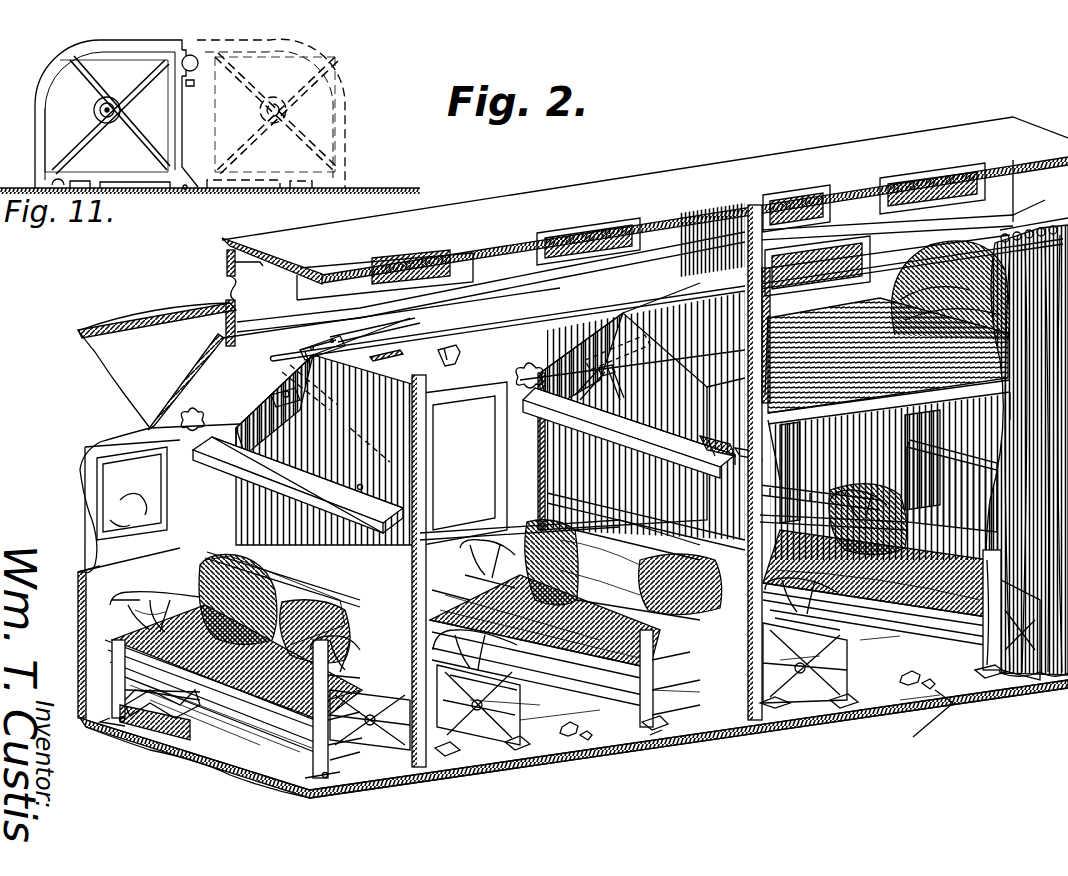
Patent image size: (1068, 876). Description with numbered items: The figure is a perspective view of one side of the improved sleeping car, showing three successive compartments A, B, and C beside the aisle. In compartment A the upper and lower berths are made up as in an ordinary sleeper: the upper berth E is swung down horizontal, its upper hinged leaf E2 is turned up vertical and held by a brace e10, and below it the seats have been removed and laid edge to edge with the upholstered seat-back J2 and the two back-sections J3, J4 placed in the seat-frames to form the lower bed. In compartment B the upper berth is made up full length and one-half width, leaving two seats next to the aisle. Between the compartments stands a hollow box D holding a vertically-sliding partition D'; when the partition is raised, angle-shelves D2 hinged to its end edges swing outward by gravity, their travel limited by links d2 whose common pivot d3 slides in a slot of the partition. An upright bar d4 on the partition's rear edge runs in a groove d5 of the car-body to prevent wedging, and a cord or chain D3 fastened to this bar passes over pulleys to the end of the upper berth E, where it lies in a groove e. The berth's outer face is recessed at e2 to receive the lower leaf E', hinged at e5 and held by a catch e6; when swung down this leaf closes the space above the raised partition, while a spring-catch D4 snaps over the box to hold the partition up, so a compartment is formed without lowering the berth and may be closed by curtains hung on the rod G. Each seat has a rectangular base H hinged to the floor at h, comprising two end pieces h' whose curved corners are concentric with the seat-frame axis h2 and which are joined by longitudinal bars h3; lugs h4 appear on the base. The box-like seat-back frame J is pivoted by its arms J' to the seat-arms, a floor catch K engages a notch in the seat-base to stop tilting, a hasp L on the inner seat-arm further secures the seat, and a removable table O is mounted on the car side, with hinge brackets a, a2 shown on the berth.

In FIG. 11, the rectangular base H is at (116, 114).
In FIG. 11, the hinge pivot h is at (187, 204).
In FIG. 2, the hinge pivot h is at (552, 732).
In FIG. 11, the end piece h' is at (121, 159).
In FIG. 2, the end piece h' is at (587, 664).
In FIG. 11, the seat-frame axis h2 is at (122, 110).
In FIG. 11, the longitudinal bar h3 is at (92, 180).
In FIG. 11, the bracket lug h4 is at (182, 86).
In FIG. 2, the compartment A is at (952, 702).
In FIG. 2, the compartment B is at (605, 737).
In FIG. 2, the compartment C is at (171, 666).
In FIG. 2, the hollow section or box D is at (587, 507).
In FIG. 2, the vertically-sliding partition D' is at (490, 441).
In FIG. 2, the angle-shelf D2 is at (340, 512).
In FIG. 2, the cord or chain D3 is at (432, 495).
In FIG. 2, the spring-catch D4 is at (410, 585).
In FIG. 2, the hinge d' is at (363, 440).
In FIG. 2, the link d2 is at (380, 483).
In FIG. 2, the pivot d3 is at (445, 528).
In FIG. 2, the upright rod or bar d4 is at (505, 466).
In FIG. 2, the groove or way d5 is at (230, 490).
In FIG. 2, the upper berth E is at (446, 359).
In FIG. 2, the lower leaf E' is at (503, 421).
In FIG. 2, the upper hinged leaf E2 is at (755, 372).
In FIG. 2, the groove e is at (391, 349).
In FIG. 2, the rabbet or recess e2 is at (360, 334).
In FIG. 2, the hinge e5 is at (615, 350).
In FIG. 2, the catch e6 is at (456, 360).
In FIG. 2, the brace e10 is at (790, 400).
In FIG. 2, the curtain rod G is at (667, 293).
In FIG. 2, the seat-back frame J is at (708, 530).
In FIG. 2, the arm J' is at (708, 578).
In FIG. 2, the upholstered seat-back J2 is at (472, 615).
In FIG. 2, the back-section J3 is at (955, 520).
In FIG. 2, the back-section J4 is at (970, 530).
In FIG. 2, the catch K is at (575, 700).
In FIG. 2, the hasp L is at (547, 634).
In FIG. 2, the table O is at (628, 542).
In FIG. 2, the hinge bracket a is at (322, 349).
In FIG. 2, the hinge bracket a2 is at (575, 457).